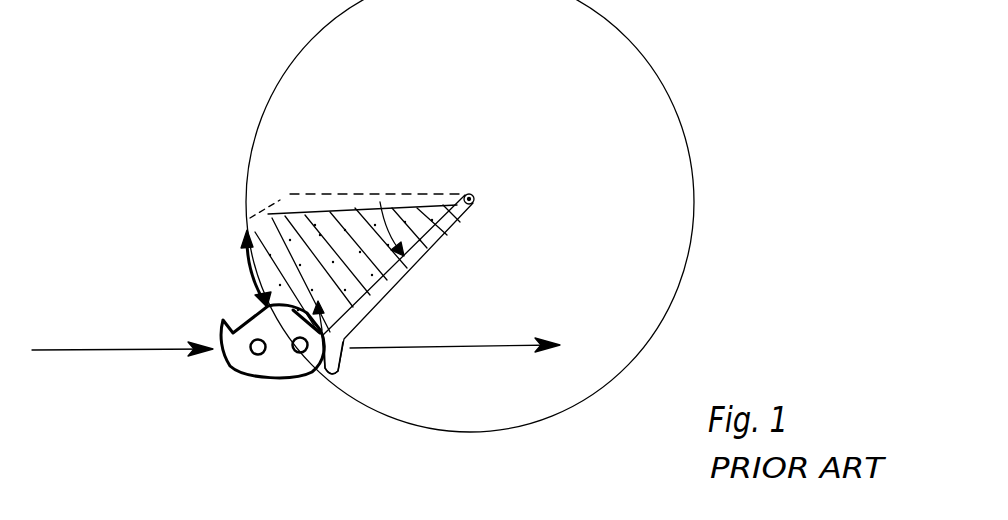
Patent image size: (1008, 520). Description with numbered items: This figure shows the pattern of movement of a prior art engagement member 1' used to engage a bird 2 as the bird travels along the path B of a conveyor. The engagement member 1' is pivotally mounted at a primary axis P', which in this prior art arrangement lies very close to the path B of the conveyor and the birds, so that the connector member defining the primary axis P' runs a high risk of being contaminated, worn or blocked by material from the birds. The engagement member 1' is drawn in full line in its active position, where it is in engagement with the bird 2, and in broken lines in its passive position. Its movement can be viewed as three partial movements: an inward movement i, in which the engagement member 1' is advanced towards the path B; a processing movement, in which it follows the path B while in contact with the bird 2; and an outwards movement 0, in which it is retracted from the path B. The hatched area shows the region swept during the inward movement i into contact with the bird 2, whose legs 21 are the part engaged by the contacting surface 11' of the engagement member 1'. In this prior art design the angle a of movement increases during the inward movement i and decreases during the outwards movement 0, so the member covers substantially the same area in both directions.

The primary axis P' is at (590, 124).
The engagement member 1' is at (530, 284).
The bird 2 is at (238, 372).
The legs 21 is at (294, 368).
The fastening bolt 11' is at (371, 412).
The path B is at (296, 365).
The outwards movement 0 is at (241, 268).
The inward movement i is at (229, 298).
The angle of movement a is at (380, 229).